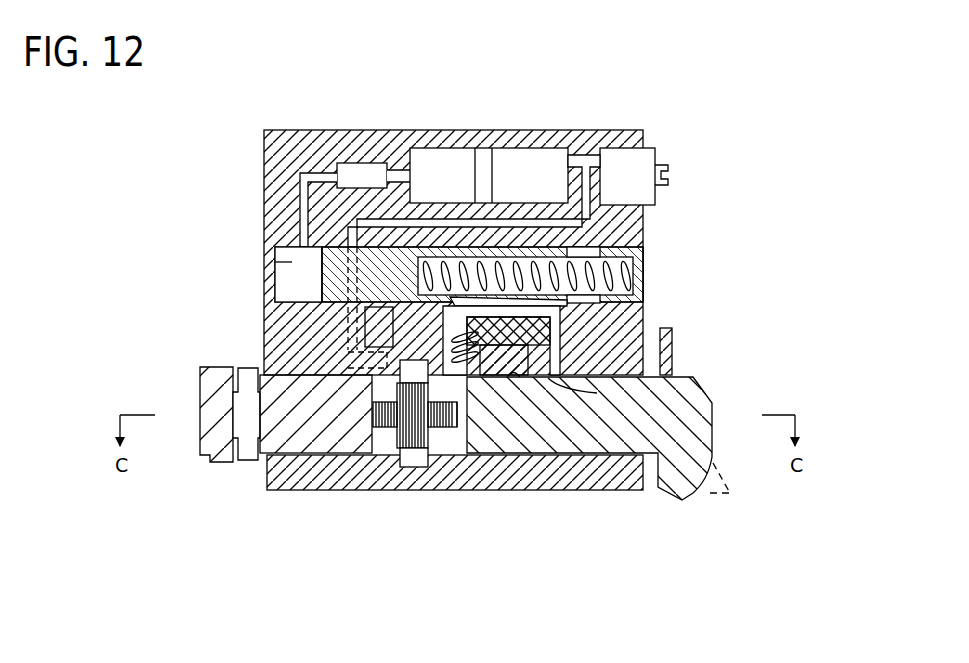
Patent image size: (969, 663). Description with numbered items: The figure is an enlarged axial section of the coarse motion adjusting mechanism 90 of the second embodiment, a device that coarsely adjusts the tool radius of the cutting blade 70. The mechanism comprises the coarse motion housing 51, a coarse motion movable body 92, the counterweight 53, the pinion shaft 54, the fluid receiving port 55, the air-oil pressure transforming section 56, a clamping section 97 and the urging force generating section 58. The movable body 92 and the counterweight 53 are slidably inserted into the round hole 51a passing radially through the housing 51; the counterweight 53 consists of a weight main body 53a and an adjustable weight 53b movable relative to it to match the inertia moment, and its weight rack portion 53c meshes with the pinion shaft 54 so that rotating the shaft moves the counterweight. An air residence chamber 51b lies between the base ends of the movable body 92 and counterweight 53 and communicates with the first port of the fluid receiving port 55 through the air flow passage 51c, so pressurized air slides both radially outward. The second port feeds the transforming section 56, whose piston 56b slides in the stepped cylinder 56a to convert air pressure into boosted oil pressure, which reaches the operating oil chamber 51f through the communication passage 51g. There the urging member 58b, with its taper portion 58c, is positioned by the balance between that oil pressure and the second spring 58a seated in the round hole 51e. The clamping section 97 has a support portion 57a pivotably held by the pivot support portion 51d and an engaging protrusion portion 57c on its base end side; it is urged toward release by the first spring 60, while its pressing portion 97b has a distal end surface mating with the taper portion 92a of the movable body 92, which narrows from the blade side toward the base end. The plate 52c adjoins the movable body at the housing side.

The coarse motion housing 51 is at (588, 130).
The round hole 51a is at (320, 447).
The air residence chamber 51b is at (450, 440).
The air flow passage 51c is at (643, 210).
The pivot support portion 51d is at (322, 294).
The round hole 51e is at (285, 262).
The operating oil chamber 51f is at (290, 273).
The communication passage 51g is at (304, 190).
The plate 52c is at (672, 355).
The counterweight 53 is at (200, 438).
The weight main body 53a is at (248, 462).
The adjustable weight 53b is at (213, 465).
The weight rack portion 53c is at (384, 430).
The pinion shaft 54 is at (413, 460).
The fluid receiving port 55 is at (655, 152).
The air-oil pressure transforming section 56 is at (443, 128).
The stepped cylinder 56a is at (370, 170).
The piston 56b is at (480, 160).
The support portion 57a is at (365, 330).
The engaging protrusion portion 57c is at (550, 302).
The urging force generating section 58 is at (378, 243).
The second spring 58a is at (636, 258).
The urging member 58b is at (322, 285).
The taper portion 58c is at (350, 355).
The first spring 60 is at (463, 365).
The cutting blade 70 is at (722, 500).
The coarse motion adjusting mechanism 90 is at (662, 127).
The coarse motion movable body 92 is at (593, 432).
The taper portion 92a is at (527, 380).
The clamping section 97 is at (540, 327).
The pressing portion 97b is at (597, 393).